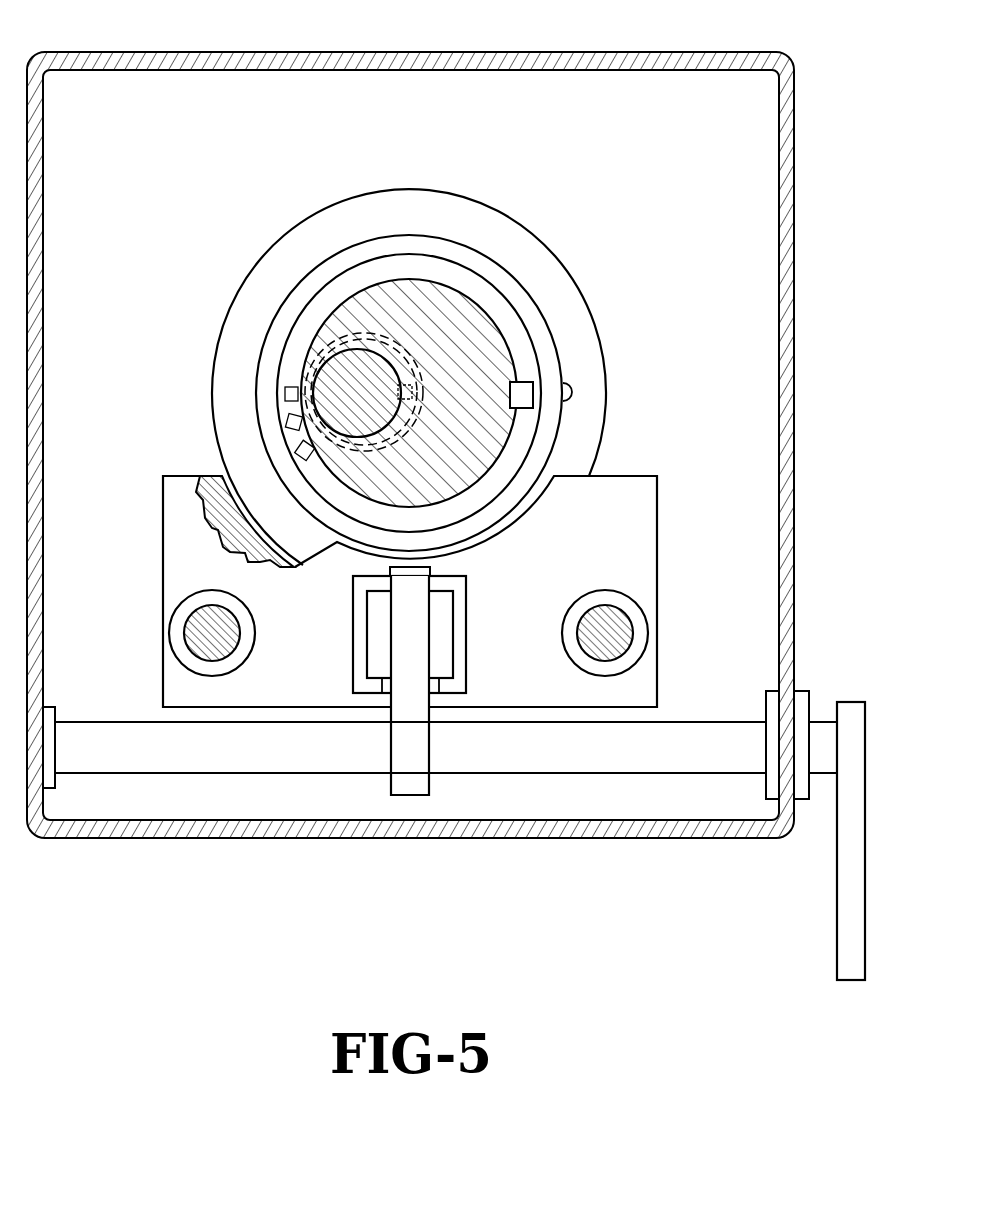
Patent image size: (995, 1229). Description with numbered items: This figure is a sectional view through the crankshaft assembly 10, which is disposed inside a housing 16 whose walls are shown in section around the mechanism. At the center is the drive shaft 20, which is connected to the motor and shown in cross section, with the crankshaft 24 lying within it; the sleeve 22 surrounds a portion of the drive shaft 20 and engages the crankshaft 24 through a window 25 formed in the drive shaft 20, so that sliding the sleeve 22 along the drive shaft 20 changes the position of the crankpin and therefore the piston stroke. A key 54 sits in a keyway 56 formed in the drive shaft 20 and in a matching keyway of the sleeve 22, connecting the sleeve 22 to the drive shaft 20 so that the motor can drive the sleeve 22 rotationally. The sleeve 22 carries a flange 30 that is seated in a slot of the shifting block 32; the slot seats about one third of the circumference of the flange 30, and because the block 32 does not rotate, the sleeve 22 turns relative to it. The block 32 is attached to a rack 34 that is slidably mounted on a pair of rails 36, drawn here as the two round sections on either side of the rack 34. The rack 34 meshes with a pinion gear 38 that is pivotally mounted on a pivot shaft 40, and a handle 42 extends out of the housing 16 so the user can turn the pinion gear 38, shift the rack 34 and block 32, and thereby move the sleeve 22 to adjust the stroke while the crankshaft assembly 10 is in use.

The crankshaft assembly 10 is at (525, 188).
The housing 16 is at (248, 53).
The drive shaft 20 is at (502, 355).
The sleeve 22 is at (537, 312).
The crankshaft 24 is at (330, 376).
The window 25 is at (303, 333).
The flange 30 is at (540, 252).
The shifting block 32 is at (640, 520).
The rack 34 is at (455, 612).
The rails 36 is at (190, 632).
The pinion gear 38 is at (415, 650).
The pivot shaft 40 is at (708, 730).
The handle 42 is at (845, 920).
The key 54 is at (533, 387).
The keyway 56 is at (533, 398).